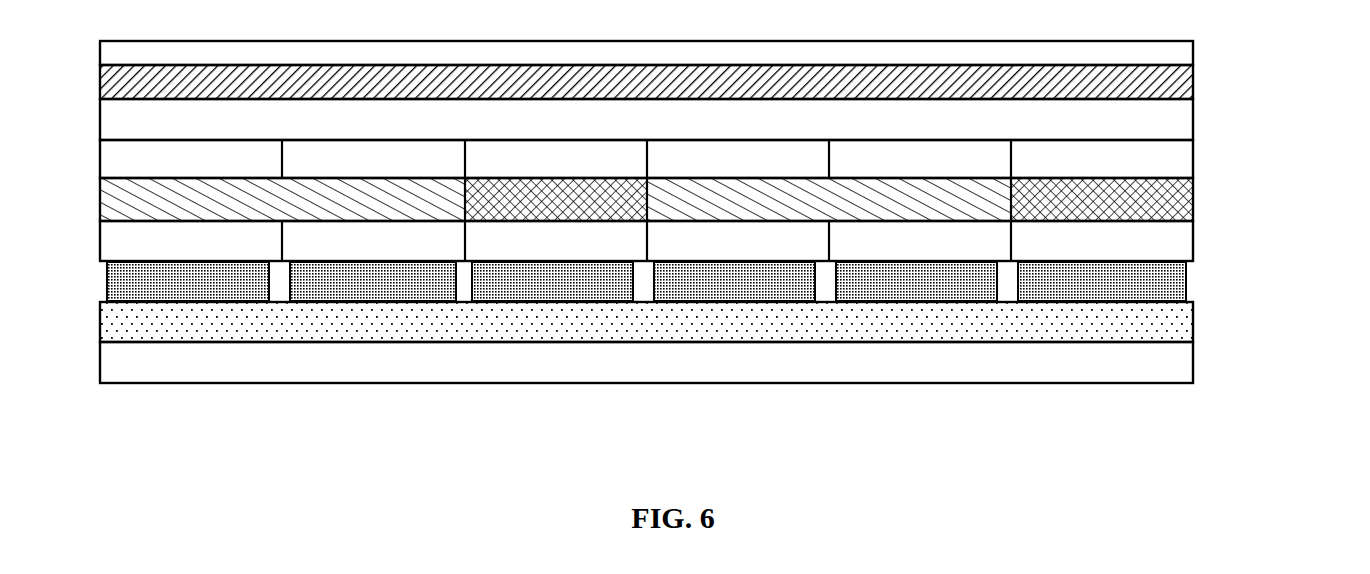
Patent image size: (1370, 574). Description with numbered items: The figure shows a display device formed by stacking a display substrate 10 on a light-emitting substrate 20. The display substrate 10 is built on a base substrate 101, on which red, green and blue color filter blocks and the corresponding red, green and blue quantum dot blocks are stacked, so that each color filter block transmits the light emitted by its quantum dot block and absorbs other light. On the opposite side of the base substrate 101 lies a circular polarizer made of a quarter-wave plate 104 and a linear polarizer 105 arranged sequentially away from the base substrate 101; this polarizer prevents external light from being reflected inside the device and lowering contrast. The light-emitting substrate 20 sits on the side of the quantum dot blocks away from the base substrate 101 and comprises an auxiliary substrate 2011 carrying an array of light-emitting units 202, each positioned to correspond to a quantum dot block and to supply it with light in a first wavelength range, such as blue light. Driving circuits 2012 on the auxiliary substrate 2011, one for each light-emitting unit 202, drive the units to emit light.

The display substrate 10 is at (677, 147).
The light-emitting substrate 20 is at (684, 349).
The base substrate 101 is at (1215, 123).
The quarter-wave plate 104 is at (1215, 82).
The linear polarizer 105 is at (1215, 49).
The light-emitting unit 202 is at (646, 349).
The auxiliary substrate 2011 is at (1215, 367).
The driving circuit 2012 is at (1215, 323).